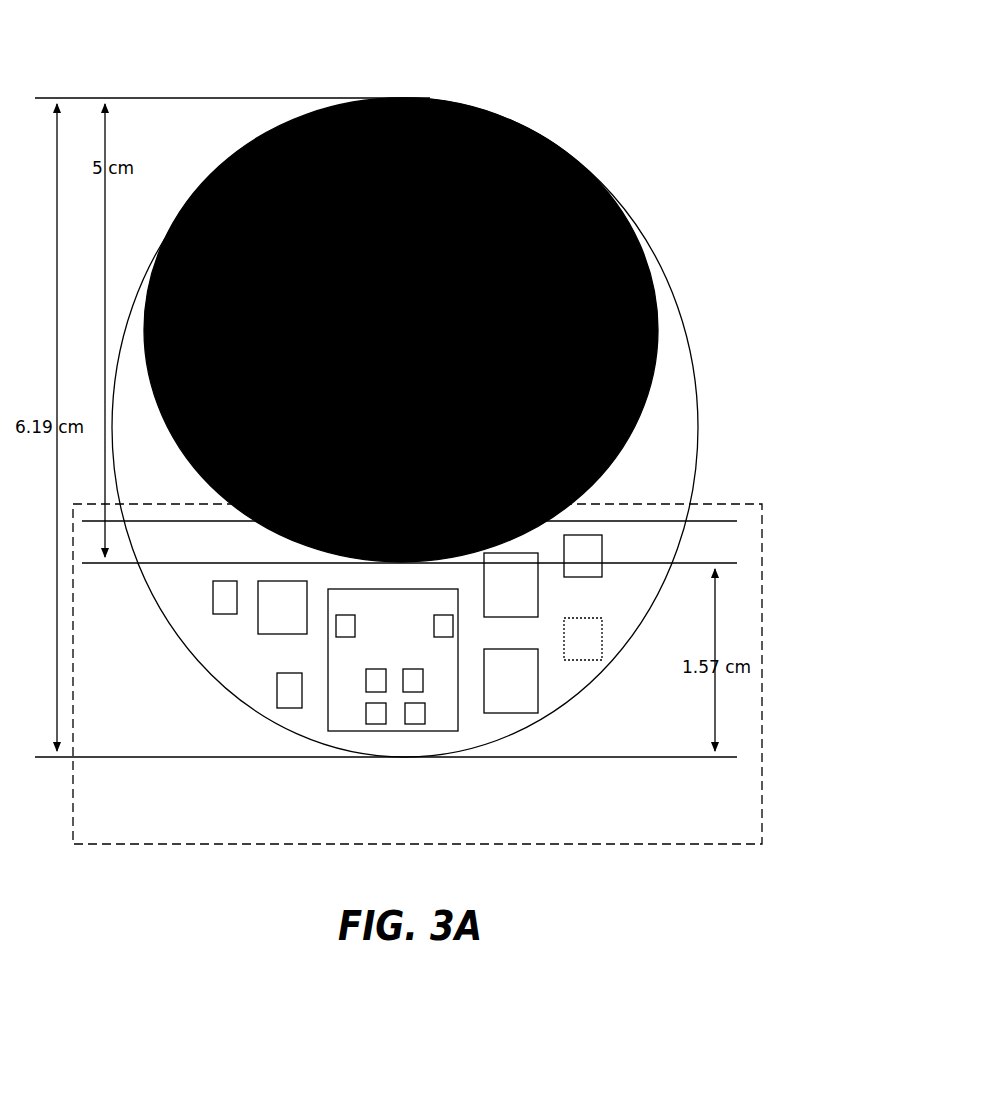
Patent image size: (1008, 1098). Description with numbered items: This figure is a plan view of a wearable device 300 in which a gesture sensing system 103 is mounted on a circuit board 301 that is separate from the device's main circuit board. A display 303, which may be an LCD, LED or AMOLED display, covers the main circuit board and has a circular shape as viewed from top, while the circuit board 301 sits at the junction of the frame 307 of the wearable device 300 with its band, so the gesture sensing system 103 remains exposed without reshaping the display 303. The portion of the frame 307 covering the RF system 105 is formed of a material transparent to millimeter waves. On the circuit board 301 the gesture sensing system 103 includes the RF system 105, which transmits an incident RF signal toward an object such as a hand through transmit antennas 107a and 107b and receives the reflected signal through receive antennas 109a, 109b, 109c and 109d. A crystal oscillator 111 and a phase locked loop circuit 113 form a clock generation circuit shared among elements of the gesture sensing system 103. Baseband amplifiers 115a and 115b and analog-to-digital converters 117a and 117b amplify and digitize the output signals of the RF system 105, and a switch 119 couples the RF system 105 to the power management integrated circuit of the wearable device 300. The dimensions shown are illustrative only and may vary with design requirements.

The wearable device 300 is at (614, 46).
The display 303 is at (530, 130).
The frame 307 is at (692, 427).
The circuit board 301 is at (500, 730).
The gesture sensing system 103 is at (763, 572).
The RF system 105 is at (345, 703).
The transmit antenna 107a is at (350, 624).
The transmit antenna 107b is at (445, 630).
The receive antenna 109a is at (377, 688).
The receive antenna 109b is at (377, 713).
The receive antenna 109c is at (420, 686).
The receive antenna 109d is at (417, 713).
The crystal oscillator 111 is at (223, 600).
The phase locked loop circuit 113 is at (273, 622).
The baseband amplifier 115a is at (522, 687).
The baseband amplifier 115b is at (528, 611).
The analog-to-digital converter 117a is at (590, 639).
The analog-to-digital converter 117b is at (580, 553).
The switch 119 is at (288, 690).